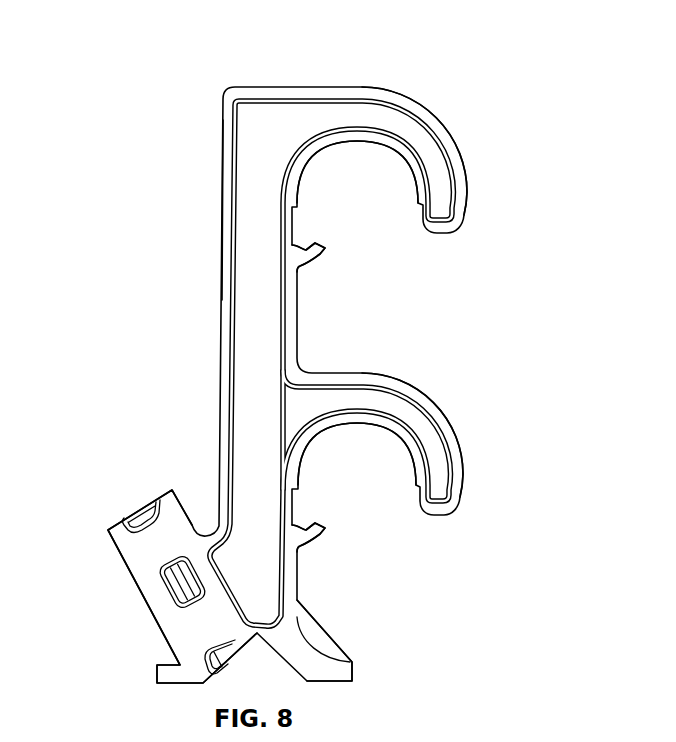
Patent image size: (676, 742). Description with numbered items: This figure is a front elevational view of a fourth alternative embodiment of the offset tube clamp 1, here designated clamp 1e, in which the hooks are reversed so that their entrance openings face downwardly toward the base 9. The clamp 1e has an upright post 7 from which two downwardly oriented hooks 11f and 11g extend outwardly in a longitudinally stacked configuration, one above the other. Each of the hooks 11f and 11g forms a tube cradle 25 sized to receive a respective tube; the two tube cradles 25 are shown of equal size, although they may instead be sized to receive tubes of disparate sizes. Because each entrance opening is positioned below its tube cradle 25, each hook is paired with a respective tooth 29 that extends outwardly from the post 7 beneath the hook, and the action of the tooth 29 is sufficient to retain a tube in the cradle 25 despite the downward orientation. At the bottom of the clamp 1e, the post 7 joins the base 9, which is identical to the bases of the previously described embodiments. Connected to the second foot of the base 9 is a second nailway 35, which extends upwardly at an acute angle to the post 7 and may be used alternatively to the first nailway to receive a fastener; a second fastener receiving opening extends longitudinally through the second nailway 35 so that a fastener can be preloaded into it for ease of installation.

The clamp 1 is at (163, 116).
The clamp 1e is at (221, 206).
The post 7 is at (221, 302).
The base 9 is at (331, 637).
The hook 11f is at (468, 184).
The hook 11g is at (461, 446).
The tube cradle 25 is at (307, 163).
The tooth 29 is at (326, 251).
The second nailway 35 is at (133, 577).